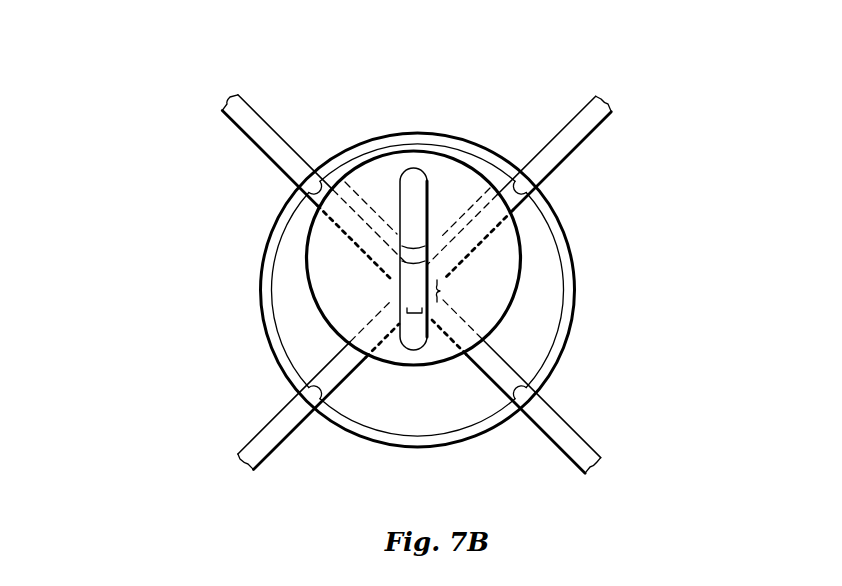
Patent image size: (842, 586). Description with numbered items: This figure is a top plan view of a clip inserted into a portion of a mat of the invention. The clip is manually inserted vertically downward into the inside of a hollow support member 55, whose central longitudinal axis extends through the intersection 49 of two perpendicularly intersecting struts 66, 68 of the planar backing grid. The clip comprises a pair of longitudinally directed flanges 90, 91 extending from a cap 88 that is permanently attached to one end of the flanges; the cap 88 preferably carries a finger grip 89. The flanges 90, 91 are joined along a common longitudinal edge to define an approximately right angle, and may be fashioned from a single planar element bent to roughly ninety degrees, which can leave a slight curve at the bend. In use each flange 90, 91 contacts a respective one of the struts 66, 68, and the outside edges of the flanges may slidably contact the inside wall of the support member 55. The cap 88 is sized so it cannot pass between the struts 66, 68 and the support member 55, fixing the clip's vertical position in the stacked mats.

The intersection 49 is at (396, 290).
The support member 55 is at (263, 271).
The strut 66 is at (257, 130).
The strut 68 is at (260, 442).
The cap 88 is at (482, 293).
The finger grip 89 is at (410, 180).
The flange 90 is at (463, 210).
The flange 91 is at (373, 215).